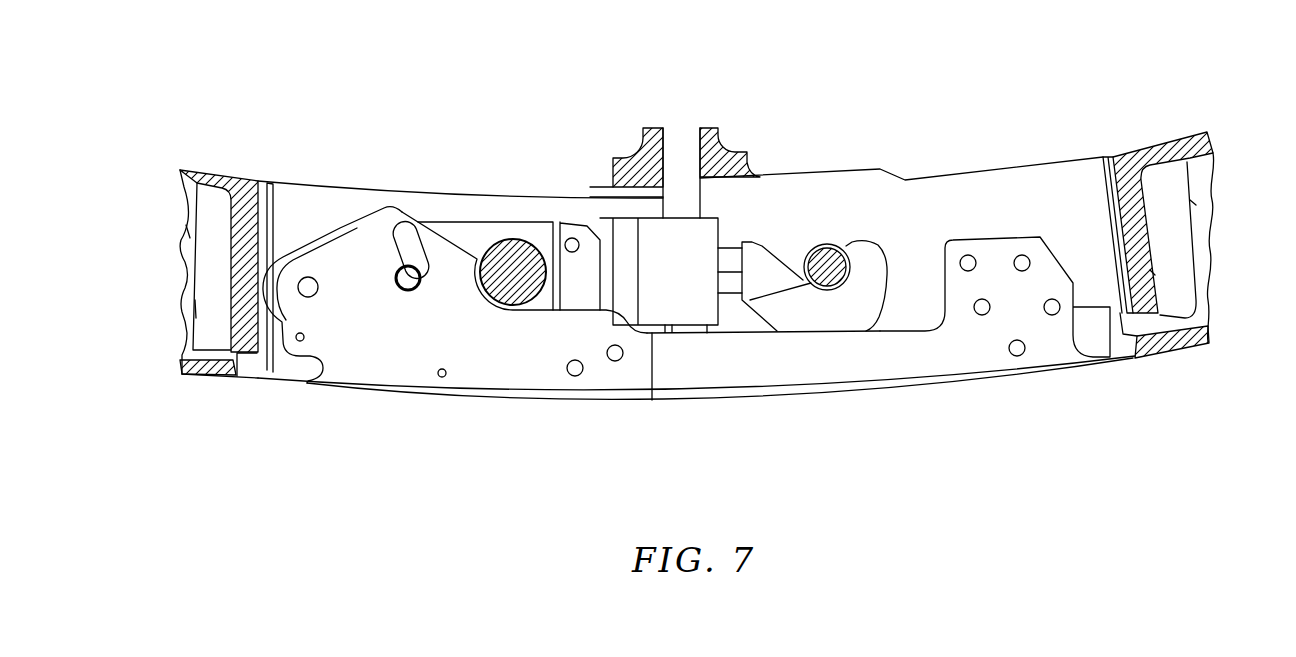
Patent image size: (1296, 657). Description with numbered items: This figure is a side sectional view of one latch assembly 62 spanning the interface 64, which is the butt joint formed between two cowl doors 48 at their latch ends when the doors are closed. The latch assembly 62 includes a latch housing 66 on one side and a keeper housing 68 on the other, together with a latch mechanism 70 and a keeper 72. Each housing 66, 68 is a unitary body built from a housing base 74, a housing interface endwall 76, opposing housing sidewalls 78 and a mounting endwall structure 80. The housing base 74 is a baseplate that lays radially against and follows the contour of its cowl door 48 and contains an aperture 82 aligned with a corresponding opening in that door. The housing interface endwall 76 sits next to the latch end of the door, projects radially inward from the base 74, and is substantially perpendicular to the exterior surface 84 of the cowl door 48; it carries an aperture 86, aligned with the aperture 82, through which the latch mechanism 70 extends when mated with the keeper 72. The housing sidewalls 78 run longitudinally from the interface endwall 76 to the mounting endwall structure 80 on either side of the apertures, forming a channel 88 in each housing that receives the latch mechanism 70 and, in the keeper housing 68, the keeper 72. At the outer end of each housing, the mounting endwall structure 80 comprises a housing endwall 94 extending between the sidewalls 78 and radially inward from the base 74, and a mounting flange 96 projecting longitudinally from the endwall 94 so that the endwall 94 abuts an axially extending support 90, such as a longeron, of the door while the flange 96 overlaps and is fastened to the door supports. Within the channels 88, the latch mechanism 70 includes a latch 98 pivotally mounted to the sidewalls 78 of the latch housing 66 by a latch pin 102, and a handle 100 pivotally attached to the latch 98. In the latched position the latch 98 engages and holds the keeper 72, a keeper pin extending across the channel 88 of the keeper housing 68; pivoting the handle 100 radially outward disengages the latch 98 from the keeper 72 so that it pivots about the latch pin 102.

The cowl door 48 is at (189, 380).
The latch assembly 62 is at (845, 108).
The interface 64 is at (685, 105).
The latch housing 66 is at (380, 190).
The keeper housing 68 is at (965, 170).
The latch mechanism 70 is at (450, 408).
The keeper 72 is at (841, 235).
The housing base 74 is at (238, 381).
The housing interface endwall 76 is at (637, 162).
The housing sidewall 78 is at (467, 194).
The mounting endwall structure 80 is at (237, 170).
The aperture 82 is at (1060, 197).
The exterior surface 84 is at (217, 378).
The aperture 86 is at (640, 200).
The channel 88 is at (305, 215).
The axially extending support 90 is at (187, 232).
The housing endwall 94 is at (232, 318).
The mounting flange 96 is at (196, 167).
The latch 98 is at (538, 230).
The handle 100 is at (545, 403).
The latch pin 102 is at (510, 312).